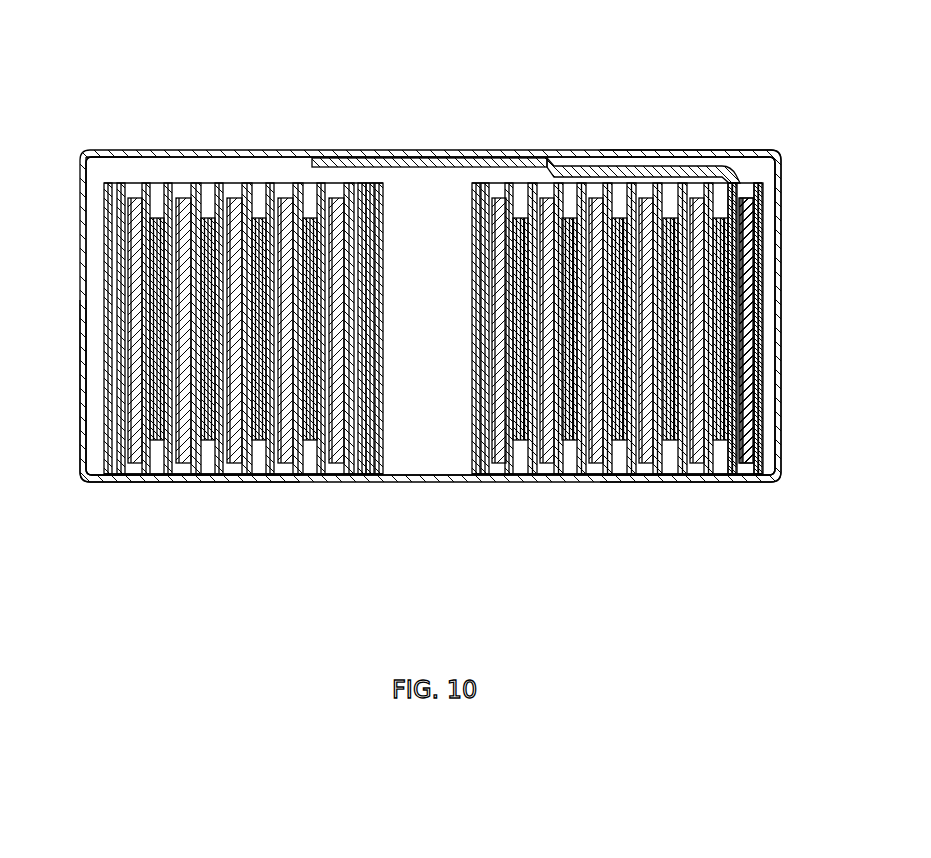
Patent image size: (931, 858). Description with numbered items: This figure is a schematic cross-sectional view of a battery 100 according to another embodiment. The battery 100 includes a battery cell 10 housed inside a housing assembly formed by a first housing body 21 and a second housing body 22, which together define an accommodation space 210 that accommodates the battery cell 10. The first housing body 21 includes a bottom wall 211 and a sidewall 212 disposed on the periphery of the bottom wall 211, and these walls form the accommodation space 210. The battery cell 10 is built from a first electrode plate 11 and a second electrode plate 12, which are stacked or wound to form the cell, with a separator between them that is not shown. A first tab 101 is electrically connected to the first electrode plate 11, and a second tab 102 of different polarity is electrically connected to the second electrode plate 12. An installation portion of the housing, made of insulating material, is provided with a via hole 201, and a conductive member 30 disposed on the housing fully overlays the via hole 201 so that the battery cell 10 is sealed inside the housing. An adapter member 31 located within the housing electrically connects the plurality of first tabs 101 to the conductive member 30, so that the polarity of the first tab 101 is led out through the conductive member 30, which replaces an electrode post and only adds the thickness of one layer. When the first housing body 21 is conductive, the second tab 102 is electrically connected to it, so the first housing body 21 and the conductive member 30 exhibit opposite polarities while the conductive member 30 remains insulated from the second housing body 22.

The battery 100 is at (441, 68).
The battery cell 10 is at (770, 544).
The first electrode plate 11 is at (740, 477).
The second electrode plate 12 is at (688, 477).
The first housing body 21 is at (198, 544).
The accommodation space 210 is at (122, 166).
The bottom wall 211 is at (197, 477).
The sidewall 212 is at (87, 480).
The second housing body 22 is at (698, 151).
The conductive member 30 is at (526, 141).
The adapter member 31 is at (632, 165).
The via hole 201 is at (381, 151).
The first tab 101 is at (780, 356).
The second tab 102 is at (233, 477).